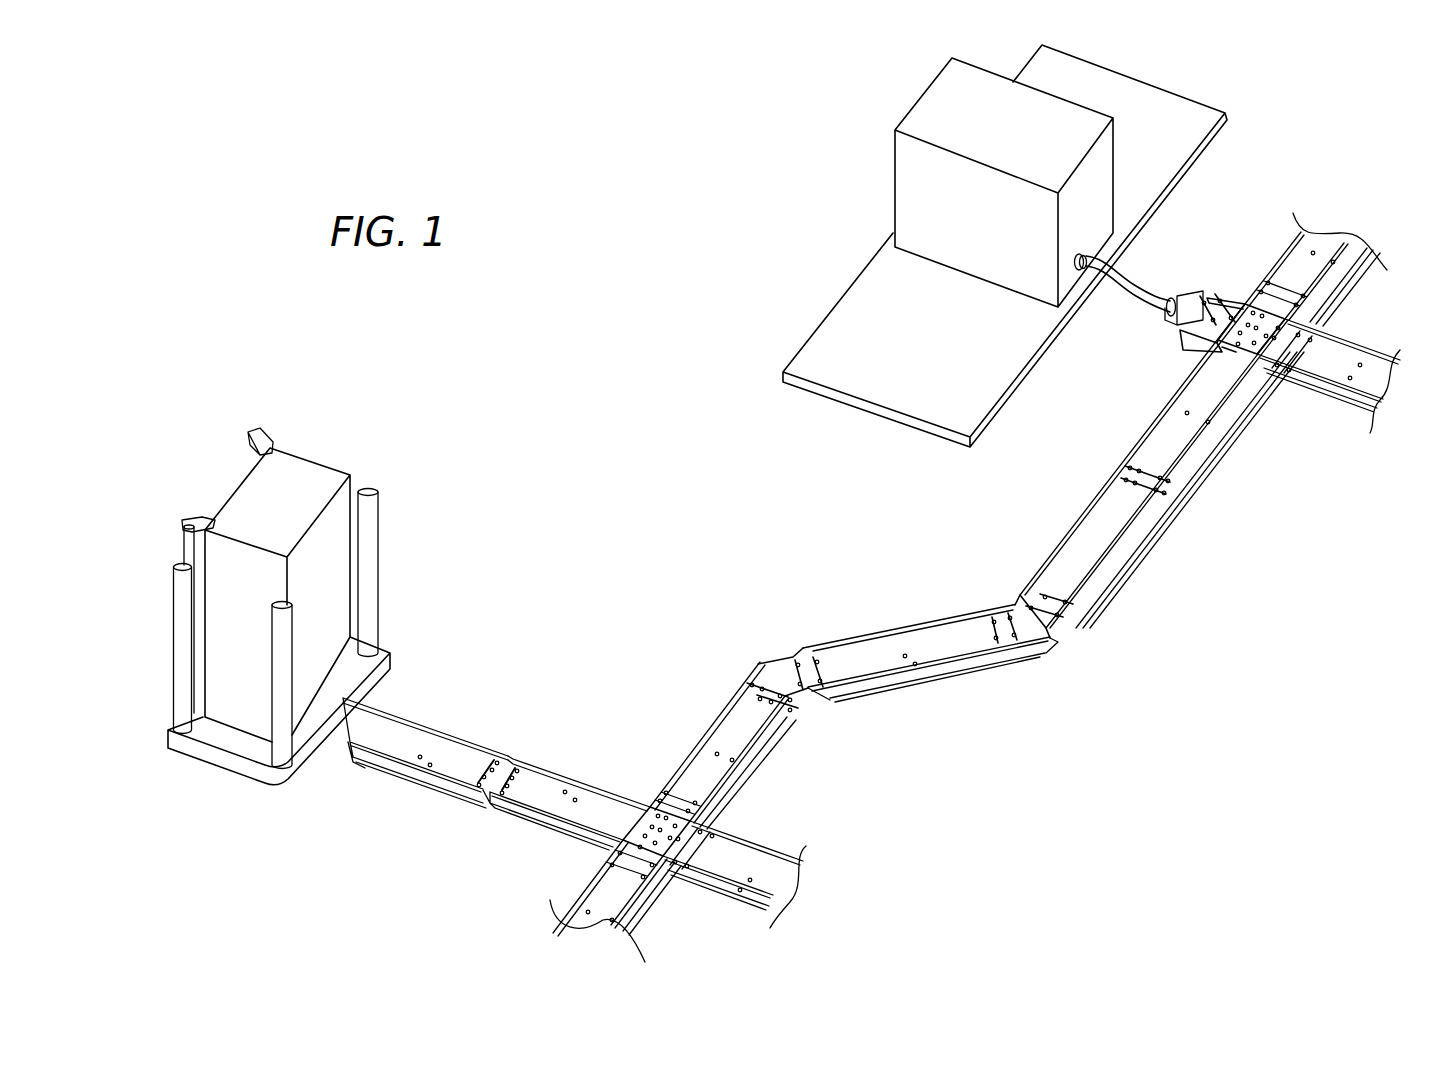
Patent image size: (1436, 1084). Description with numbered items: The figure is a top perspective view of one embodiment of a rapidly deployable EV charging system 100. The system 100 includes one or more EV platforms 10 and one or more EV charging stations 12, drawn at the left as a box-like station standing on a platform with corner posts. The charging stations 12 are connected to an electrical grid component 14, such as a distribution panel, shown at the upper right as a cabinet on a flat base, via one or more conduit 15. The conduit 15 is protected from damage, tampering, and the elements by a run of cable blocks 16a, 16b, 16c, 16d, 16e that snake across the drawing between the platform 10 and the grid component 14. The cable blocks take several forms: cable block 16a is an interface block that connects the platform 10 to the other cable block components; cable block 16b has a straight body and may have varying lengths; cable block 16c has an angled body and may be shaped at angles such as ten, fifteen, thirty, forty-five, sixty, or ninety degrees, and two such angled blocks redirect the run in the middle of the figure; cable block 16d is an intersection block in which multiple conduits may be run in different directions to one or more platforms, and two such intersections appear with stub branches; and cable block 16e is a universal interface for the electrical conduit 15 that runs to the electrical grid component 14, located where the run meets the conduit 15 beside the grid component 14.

The rapidly deployable EV charging system 100 is at (746, 223).
The EV platform 10 is at (219, 792).
The EV charging station 12 is at (295, 475).
The electrical grid component 14 is at (1077, 127).
The conduit 15 is at (1143, 284).
The cable block 16a is at (375, 703).
The cable block 16b is at (455, 753).
The cable block 16c is at (781, 668).
The cable block 16d is at (693, 821).
The cable block 16e is at (1207, 297).